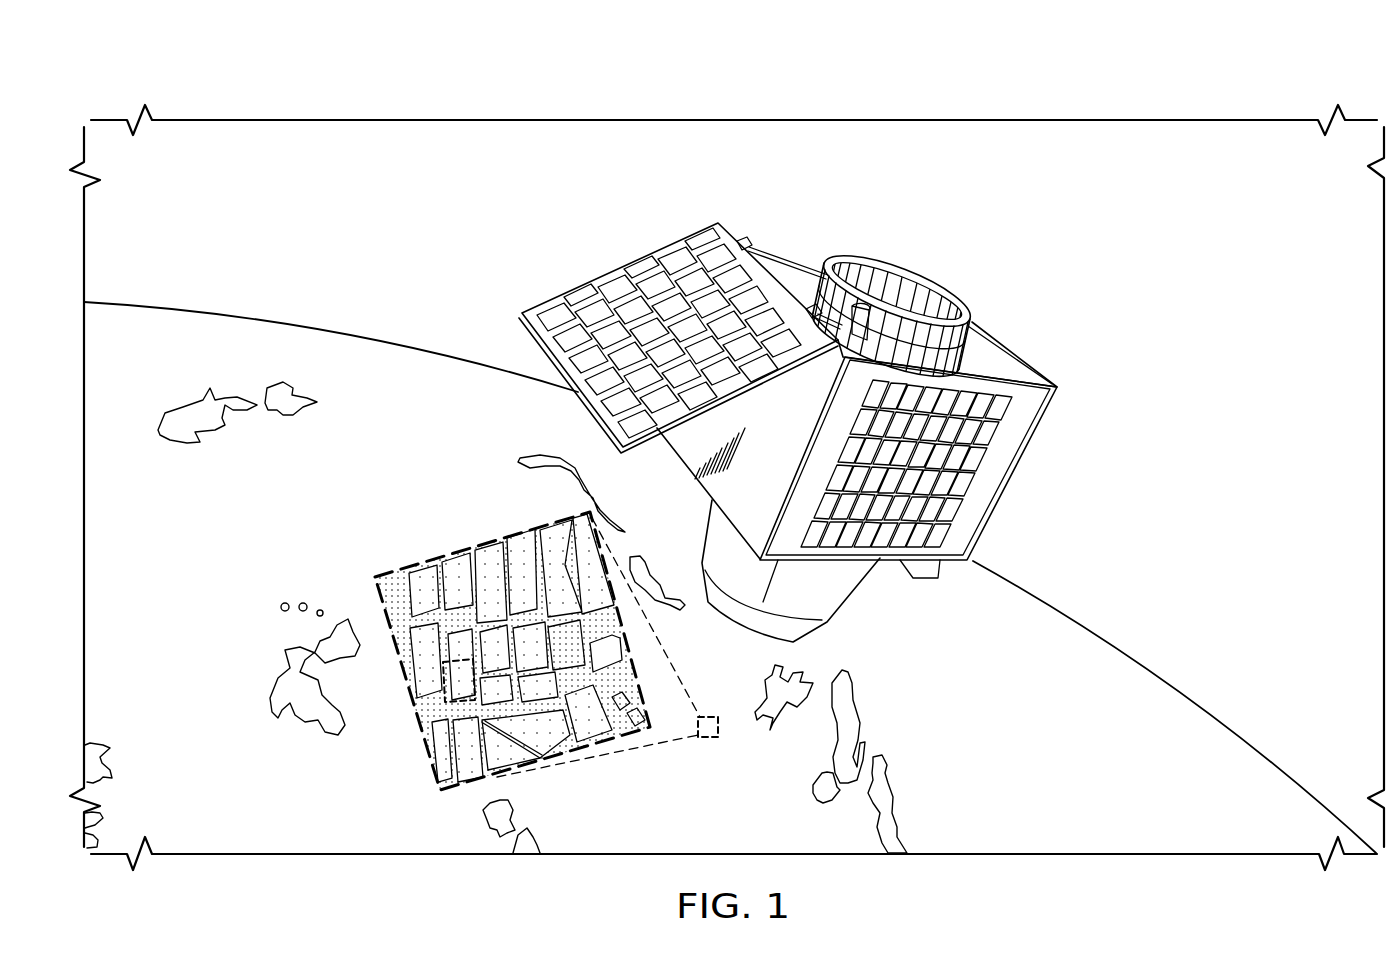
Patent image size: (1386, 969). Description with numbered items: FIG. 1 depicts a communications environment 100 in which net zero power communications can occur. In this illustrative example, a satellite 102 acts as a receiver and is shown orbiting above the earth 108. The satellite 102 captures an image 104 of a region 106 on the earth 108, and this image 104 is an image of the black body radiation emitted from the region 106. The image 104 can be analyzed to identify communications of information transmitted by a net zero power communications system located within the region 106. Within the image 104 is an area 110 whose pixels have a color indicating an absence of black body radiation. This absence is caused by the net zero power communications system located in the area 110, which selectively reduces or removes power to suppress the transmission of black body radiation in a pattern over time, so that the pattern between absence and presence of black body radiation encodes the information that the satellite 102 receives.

The communications environment 100 is at (922, 96).
The satellite 102 is at (1000, 337).
The image 104 is at (414, 564).
The region 106 is at (718, 737).
The earth 108 is at (357, 336).
The area 110 is at (444, 694).